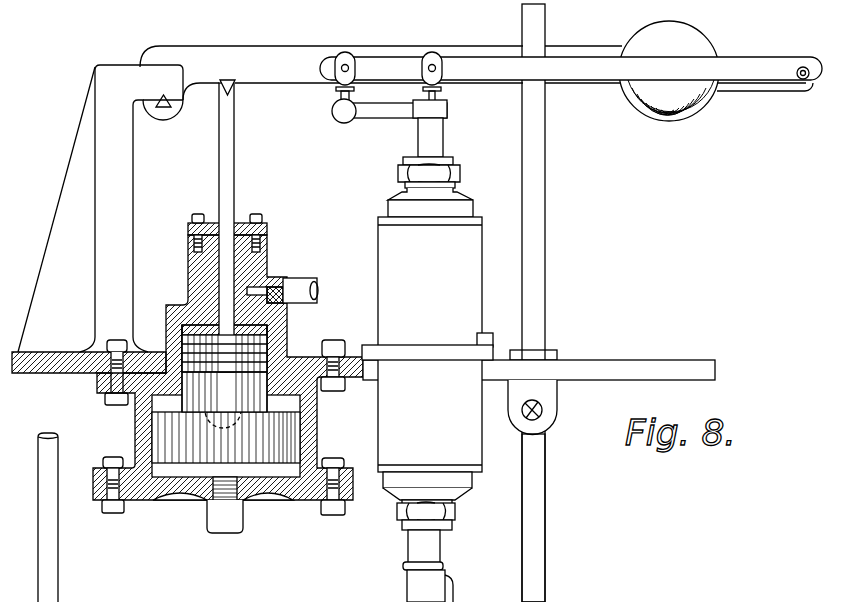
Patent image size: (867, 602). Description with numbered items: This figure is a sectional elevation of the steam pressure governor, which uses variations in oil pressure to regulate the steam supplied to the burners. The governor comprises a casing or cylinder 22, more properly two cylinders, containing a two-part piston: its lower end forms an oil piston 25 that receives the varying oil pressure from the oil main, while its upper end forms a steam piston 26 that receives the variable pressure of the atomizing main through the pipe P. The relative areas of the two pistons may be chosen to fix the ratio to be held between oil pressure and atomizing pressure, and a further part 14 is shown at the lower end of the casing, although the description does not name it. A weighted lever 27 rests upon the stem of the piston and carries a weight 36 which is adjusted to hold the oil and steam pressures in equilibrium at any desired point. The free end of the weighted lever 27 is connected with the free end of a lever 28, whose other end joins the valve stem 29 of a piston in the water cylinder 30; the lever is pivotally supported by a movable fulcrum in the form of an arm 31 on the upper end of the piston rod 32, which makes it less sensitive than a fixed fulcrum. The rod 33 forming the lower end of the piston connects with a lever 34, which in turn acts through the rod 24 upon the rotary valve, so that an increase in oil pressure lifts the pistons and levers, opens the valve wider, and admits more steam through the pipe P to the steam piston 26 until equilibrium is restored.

The drain plug boss 14 is at (247, 514).
The casing or cylinder 22 is at (272, 322).
The rod 24 is at (59, 553).
The oil piston 25 is at (283, 433).
The steam piston 26 is at (256, 344).
The weighted lever 27 is at (476, 65).
The lever 28 is at (750, 62).
The valve stem 29 is at (438, 96).
The water cylinder 30 is at (378, 243).
The arm 31 is at (384, 118).
The piston rod 32 is at (444, 140).
The rod 33 is at (440, 548).
The lever 34 is at (405, 585).
The weight 36 is at (645, 33).
The pipe P is at (300, 282).